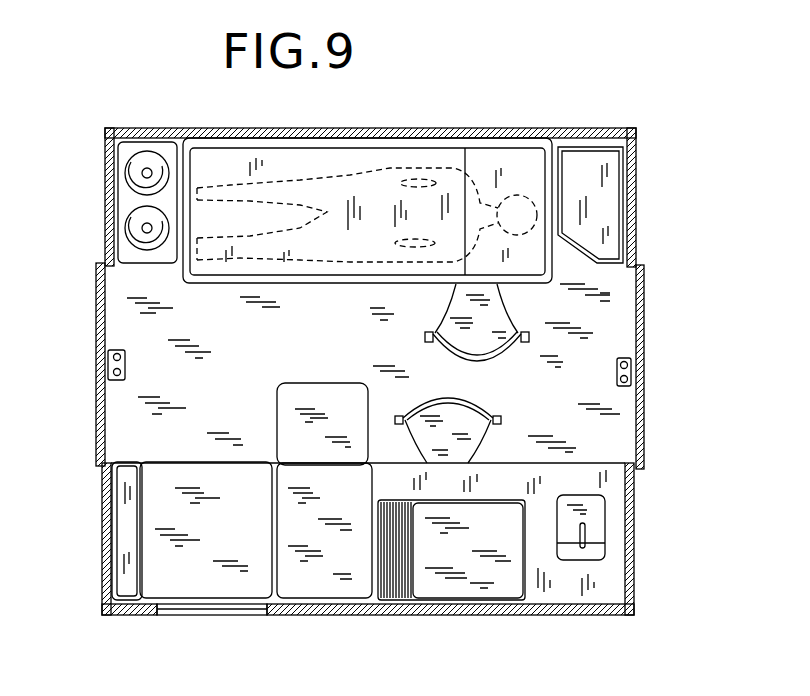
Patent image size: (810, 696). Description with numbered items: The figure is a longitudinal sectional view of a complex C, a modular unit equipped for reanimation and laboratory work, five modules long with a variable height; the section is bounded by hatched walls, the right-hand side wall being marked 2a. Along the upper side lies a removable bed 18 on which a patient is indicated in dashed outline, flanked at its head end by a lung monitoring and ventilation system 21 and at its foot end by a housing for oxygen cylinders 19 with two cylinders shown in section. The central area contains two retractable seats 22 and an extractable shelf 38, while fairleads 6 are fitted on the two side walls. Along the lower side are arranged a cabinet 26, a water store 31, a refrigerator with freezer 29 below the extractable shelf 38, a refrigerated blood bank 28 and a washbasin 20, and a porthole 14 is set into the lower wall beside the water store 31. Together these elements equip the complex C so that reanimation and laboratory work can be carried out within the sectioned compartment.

The complex C is at (556, 122).
The side wall 2a is at (644, 313).
The fairlead 6 is at (108, 365).
The porthole 14 is at (243, 615).
The removable bed 18 is at (397, 162).
The housing for oxygen cylinders 19 is at (135, 220).
The washbasin 20 is at (595, 517).
The lung monitoring and ventilation system 21 is at (607, 200).
The retractable seats 22 is at (467, 417).
The cabinet 26 is at (125, 525).
The refrigerated blood bank 28 is at (455, 585).
The refrigerator with freezer 29 is at (323, 590).
The water store 31 is at (187, 578).
The extractable shelf 38 is at (315, 398).